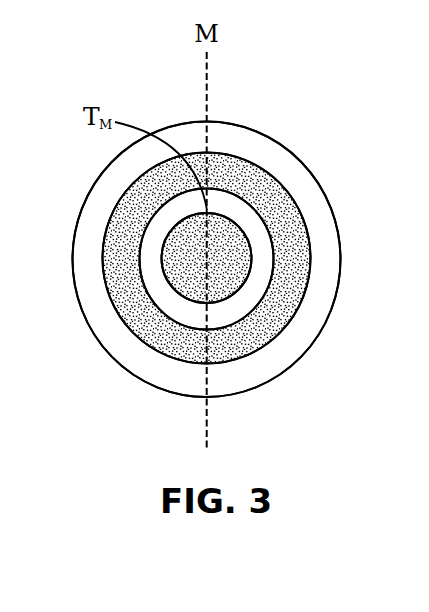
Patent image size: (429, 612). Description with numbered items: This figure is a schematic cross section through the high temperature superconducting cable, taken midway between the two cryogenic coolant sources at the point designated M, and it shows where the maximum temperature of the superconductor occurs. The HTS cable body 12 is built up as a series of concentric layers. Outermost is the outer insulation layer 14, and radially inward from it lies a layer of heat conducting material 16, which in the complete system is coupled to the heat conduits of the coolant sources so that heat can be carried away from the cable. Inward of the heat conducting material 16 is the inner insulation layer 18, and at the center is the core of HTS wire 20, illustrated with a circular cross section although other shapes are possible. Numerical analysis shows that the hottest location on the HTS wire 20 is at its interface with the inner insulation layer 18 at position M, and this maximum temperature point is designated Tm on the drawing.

The HTS cable body 12 is at (232, 121).
The outer insulation layer 14 is at (278, 158).
The heat conducting material 16 is at (292, 232).
The inner insulation layer 18 is at (262, 277).
The HTS wire 20 is at (227, 285).